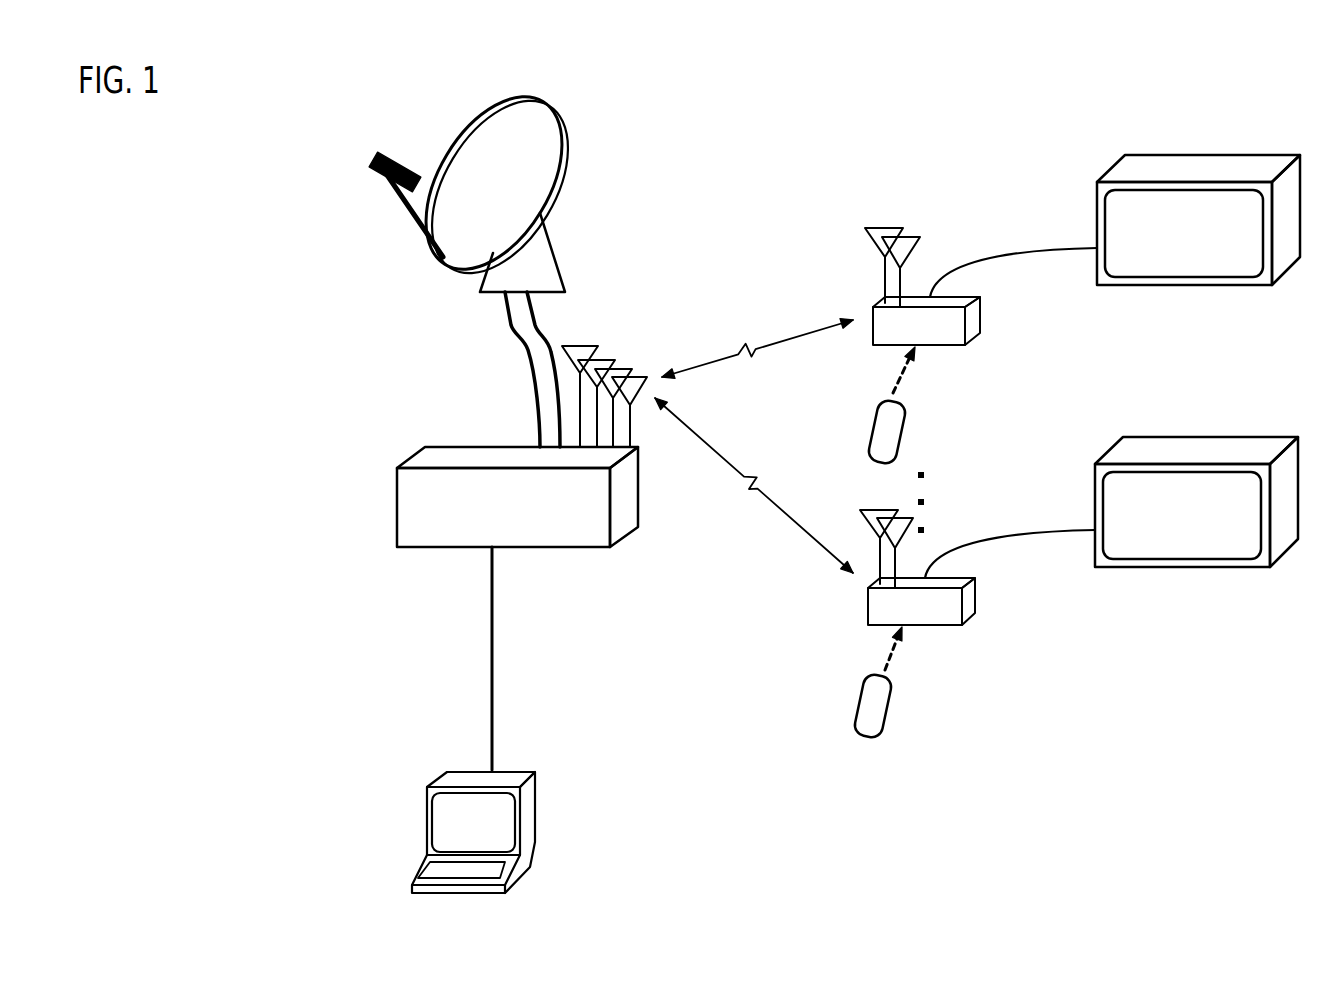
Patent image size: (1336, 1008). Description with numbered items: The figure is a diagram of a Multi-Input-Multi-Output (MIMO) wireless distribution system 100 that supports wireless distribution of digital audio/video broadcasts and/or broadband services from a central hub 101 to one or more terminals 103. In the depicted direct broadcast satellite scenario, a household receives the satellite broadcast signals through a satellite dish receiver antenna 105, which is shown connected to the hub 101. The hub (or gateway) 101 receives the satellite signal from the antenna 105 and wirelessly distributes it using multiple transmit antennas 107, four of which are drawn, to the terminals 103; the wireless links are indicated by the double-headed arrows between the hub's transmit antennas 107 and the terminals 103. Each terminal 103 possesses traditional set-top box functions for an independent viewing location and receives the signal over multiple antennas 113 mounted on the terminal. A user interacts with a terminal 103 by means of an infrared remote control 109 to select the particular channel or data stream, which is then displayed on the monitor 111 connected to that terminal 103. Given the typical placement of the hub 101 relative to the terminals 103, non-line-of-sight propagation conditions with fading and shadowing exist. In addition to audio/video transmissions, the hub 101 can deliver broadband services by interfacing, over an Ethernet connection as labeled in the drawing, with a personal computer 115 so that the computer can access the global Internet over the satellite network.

The distribution system 100 is at (752, 127).
The central hub 101 is at (395, 477).
The terminals 103 is at (978, 318).
The satellite dish receiver antenna 105 is at (482, 280).
The transmit antennas 107 is at (653, 372).
The infrared remote control 109 is at (897, 437).
The monitors 111 is at (1198, 285).
The antennas 113 is at (881, 201).
The personal computer 115 is at (427, 838).